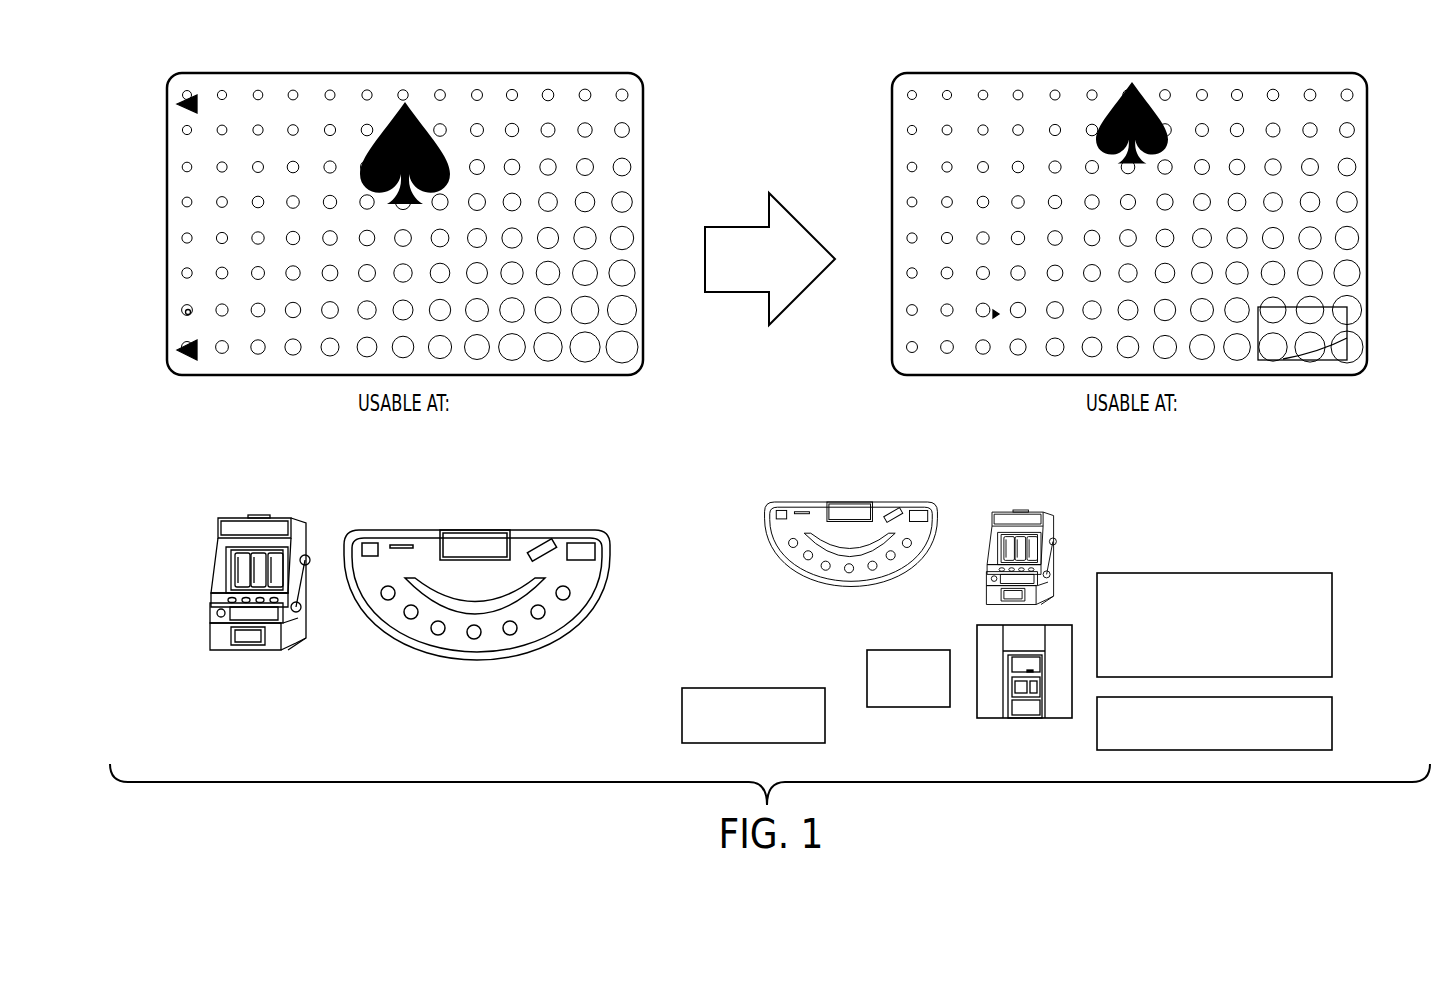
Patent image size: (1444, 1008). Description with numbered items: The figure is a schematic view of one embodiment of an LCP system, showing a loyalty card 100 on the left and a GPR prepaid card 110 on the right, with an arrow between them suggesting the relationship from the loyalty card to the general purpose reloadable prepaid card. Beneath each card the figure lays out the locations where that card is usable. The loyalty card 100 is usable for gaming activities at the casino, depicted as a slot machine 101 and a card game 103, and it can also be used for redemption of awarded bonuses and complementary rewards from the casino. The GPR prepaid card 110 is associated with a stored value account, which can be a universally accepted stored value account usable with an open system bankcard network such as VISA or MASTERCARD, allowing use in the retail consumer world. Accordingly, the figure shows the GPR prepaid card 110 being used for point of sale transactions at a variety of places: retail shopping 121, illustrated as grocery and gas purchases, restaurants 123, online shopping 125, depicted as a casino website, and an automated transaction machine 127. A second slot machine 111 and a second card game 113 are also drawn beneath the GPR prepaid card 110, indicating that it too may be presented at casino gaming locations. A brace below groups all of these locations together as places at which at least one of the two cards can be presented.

The loyalty card 100 is at (167, 225).
The GPR prepaid card 110 is at (1368, 225).
The slot machine 101 is at (262, 513).
The card game 103 is at (475, 530).
The slot machine 111 is at (1022, 510).
The gaming table 113 is at (852, 502).
The retail shopping 121 is at (682, 718).
The restaurants 123 is at (1333, 723).
The online shopping 125 is at (1333, 623).
The automated transaction machine (ATM) 127 is at (1058, 625).